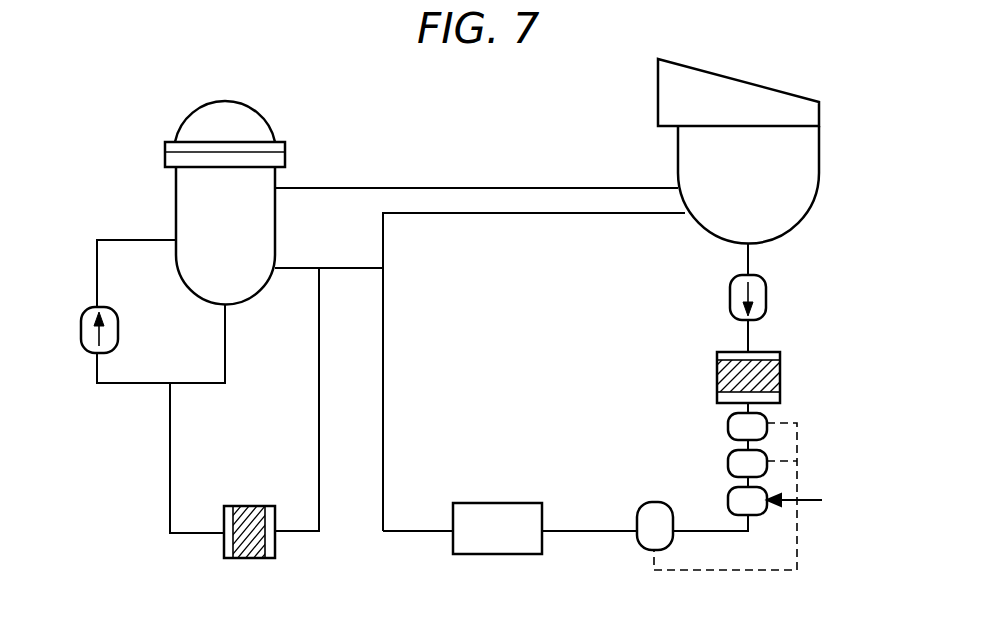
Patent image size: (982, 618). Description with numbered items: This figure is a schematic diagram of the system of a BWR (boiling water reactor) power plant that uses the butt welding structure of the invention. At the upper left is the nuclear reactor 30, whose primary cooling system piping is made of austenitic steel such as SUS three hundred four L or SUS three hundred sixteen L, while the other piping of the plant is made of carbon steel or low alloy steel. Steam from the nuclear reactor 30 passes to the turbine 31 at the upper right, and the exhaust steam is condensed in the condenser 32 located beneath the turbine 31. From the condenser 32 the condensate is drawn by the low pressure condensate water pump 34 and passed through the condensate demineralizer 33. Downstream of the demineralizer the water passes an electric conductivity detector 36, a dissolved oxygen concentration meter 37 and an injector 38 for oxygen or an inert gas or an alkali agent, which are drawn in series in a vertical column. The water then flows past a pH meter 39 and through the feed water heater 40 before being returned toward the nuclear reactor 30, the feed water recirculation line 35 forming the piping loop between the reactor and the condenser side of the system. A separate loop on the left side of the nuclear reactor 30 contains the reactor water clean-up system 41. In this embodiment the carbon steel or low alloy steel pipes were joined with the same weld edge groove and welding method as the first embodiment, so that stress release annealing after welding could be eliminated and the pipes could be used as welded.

The nuclear reactor 30 is at (257, 113).
The turbine 31 is at (658, 95).
The condenser 32 is at (678, 175).
The condensate demineralizer 33 is at (717, 375).
The low pressure condensate water pump 34 is at (730, 293).
The feed water recirculation line 35 is at (472, 215).
The electric conductivity detector 36 is at (728, 428).
The dissolved oxygen concentration meter 37 is at (728, 463).
The injector for oxygen or an inert gas or an alkali agent 38 is at (728, 497).
The pH meter 39 is at (637, 531).
The feed water heater 40 is at (493, 556).
The reactor water clean-up system 41 is at (247, 558).